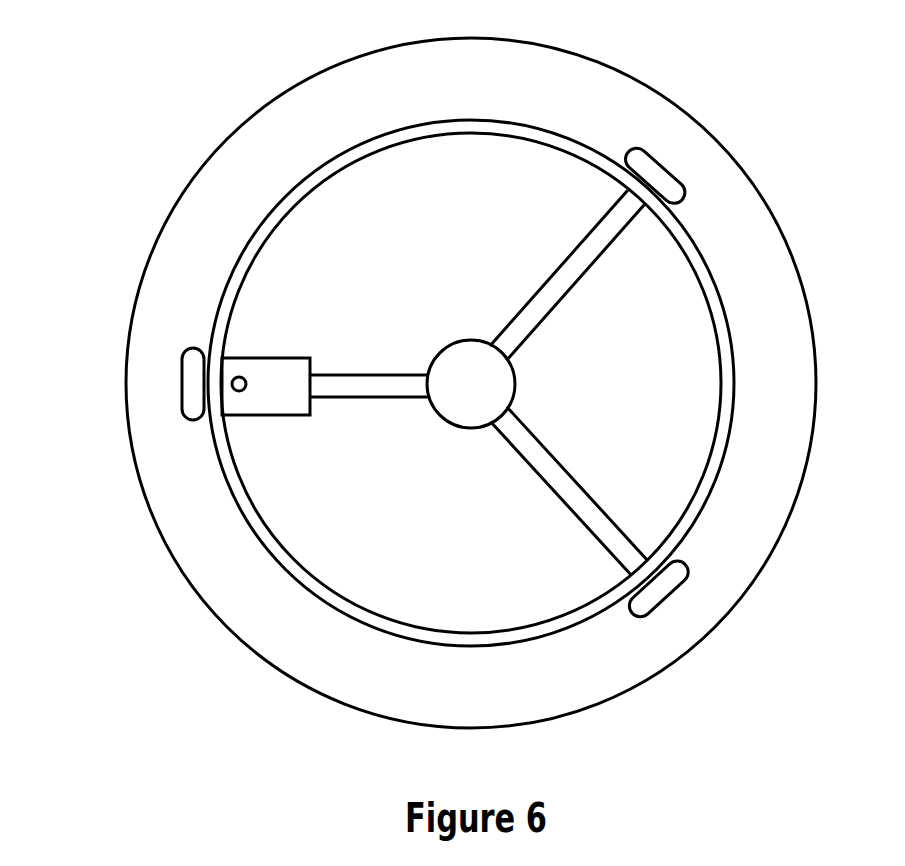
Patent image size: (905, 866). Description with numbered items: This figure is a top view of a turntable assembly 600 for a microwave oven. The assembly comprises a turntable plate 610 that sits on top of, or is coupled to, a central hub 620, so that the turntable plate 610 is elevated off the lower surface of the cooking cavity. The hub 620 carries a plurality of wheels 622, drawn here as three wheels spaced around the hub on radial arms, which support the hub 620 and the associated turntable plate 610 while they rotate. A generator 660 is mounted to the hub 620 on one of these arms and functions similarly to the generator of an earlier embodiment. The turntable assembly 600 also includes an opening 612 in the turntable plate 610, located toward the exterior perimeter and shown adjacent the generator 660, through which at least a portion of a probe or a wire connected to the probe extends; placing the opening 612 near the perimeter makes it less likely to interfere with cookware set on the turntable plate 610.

The turntable assembly 600 is at (182, 112).
The turntable plate 610 is at (595, 88).
The opening 612 is at (241, 377).
The hub 620 is at (497, 385).
The wheel 622 is at (192, 395).
The generator 660 is at (298, 372).